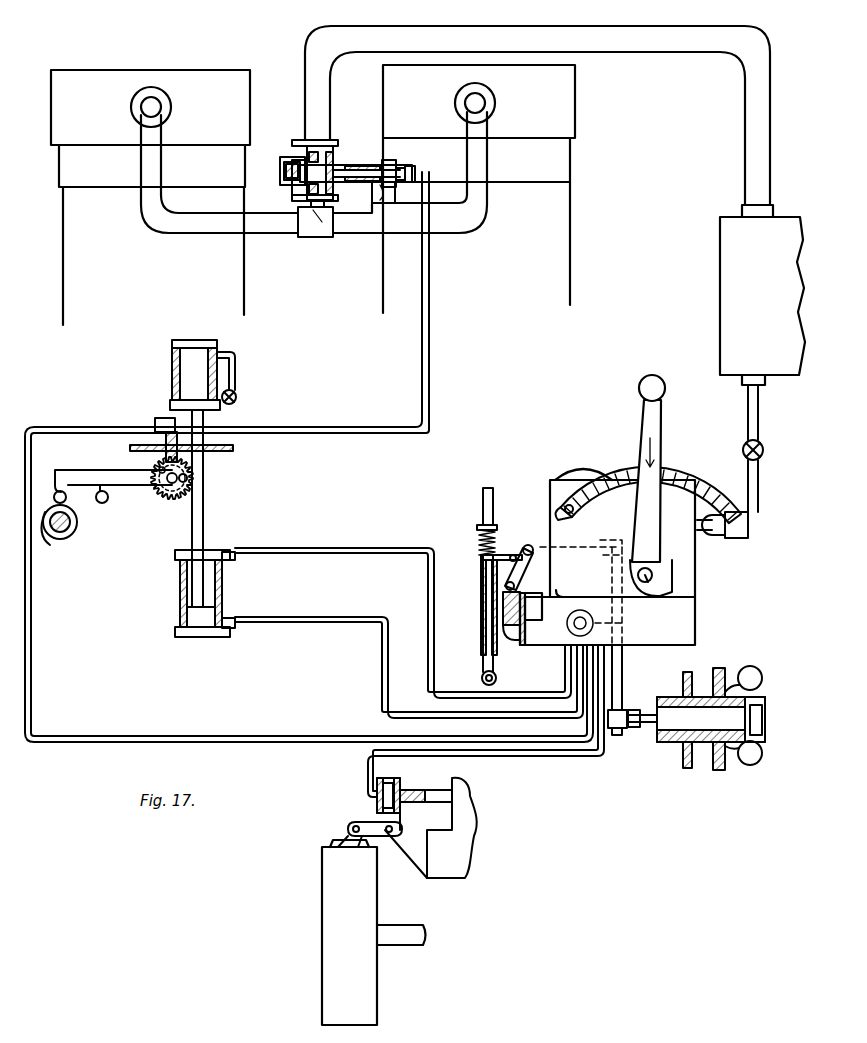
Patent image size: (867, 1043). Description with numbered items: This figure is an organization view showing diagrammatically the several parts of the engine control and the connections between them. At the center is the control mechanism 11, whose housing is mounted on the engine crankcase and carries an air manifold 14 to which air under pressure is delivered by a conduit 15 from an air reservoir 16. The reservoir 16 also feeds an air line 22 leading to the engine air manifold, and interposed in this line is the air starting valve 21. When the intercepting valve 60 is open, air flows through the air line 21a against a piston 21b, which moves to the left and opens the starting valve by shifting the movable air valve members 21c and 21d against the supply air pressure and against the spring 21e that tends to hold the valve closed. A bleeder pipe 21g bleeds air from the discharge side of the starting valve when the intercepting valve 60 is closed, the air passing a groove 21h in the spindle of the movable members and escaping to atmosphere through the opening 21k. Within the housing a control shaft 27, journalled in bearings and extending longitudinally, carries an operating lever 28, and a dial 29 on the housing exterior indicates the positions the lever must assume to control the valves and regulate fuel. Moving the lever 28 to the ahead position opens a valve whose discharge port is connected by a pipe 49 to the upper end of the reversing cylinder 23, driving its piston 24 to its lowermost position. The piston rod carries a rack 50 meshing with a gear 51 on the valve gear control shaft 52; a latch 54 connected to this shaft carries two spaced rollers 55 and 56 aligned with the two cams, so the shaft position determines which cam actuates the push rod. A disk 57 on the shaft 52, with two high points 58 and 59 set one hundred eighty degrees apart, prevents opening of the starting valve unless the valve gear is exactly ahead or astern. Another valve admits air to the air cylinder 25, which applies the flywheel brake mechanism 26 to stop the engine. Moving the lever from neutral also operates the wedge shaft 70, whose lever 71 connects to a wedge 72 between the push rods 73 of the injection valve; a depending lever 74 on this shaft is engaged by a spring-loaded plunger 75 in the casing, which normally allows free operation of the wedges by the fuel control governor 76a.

The control mechanism 11 is at (690, 620).
The air manifold 14 is at (714, 530).
The conduit 15 is at (759, 430).
The air reservoir 16 is at (776, 288).
The air starting valve 21 is at (332, 170).
The air line 21a is at (415, 176).
The piston 21b is at (406, 181).
The movable air valve member 21c is at (342, 168).
The movable air valve member 21d is at (300, 198).
The spring 21e is at (292, 161).
The bleeder pipe 21g is at (330, 211).
The groove or passageway 21h is at (389, 186).
The opening 21k is at (394, 160).
The air line 22 is at (633, 44).
The reversing cylinder 23 is at (223, 593).
The piston 24 is at (190, 613).
The air cylinder 25 is at (401, 783).
The flywheel brake mechanism 26 is at (344, 843).
The control shaft 27 is at (653, 578).
The operating lever 28 is at (663, 410).
The dial 29 is at (685, 473).
The pipe 49 is at (292, 549).
The rack 50 is at (192, 515).
The gear 51 is at (162, 502).
The valve gear control shaft 52 is at (192, 478).
The latch 54 is at (124, 473).
The roller 55 is at (59, 533).
The roller 56 is at (105, 504).
The disk 57 is at (195, 492).
The high point 58 is at (190, 469).
The high point 59 is at (171, 496).
The intercepting valve 60 is at (161, 418).
The wedge shaft 70 is at (506, 589).
The lever 71 is at (505, 571).
The wedge 72 is at (503, 555).
The push rod 73 is at (483, 509).
The lever 74 is at (508, 604).
The plunger 75 is at (528, 615).
The fuel control governor 76a is at (759, 671).